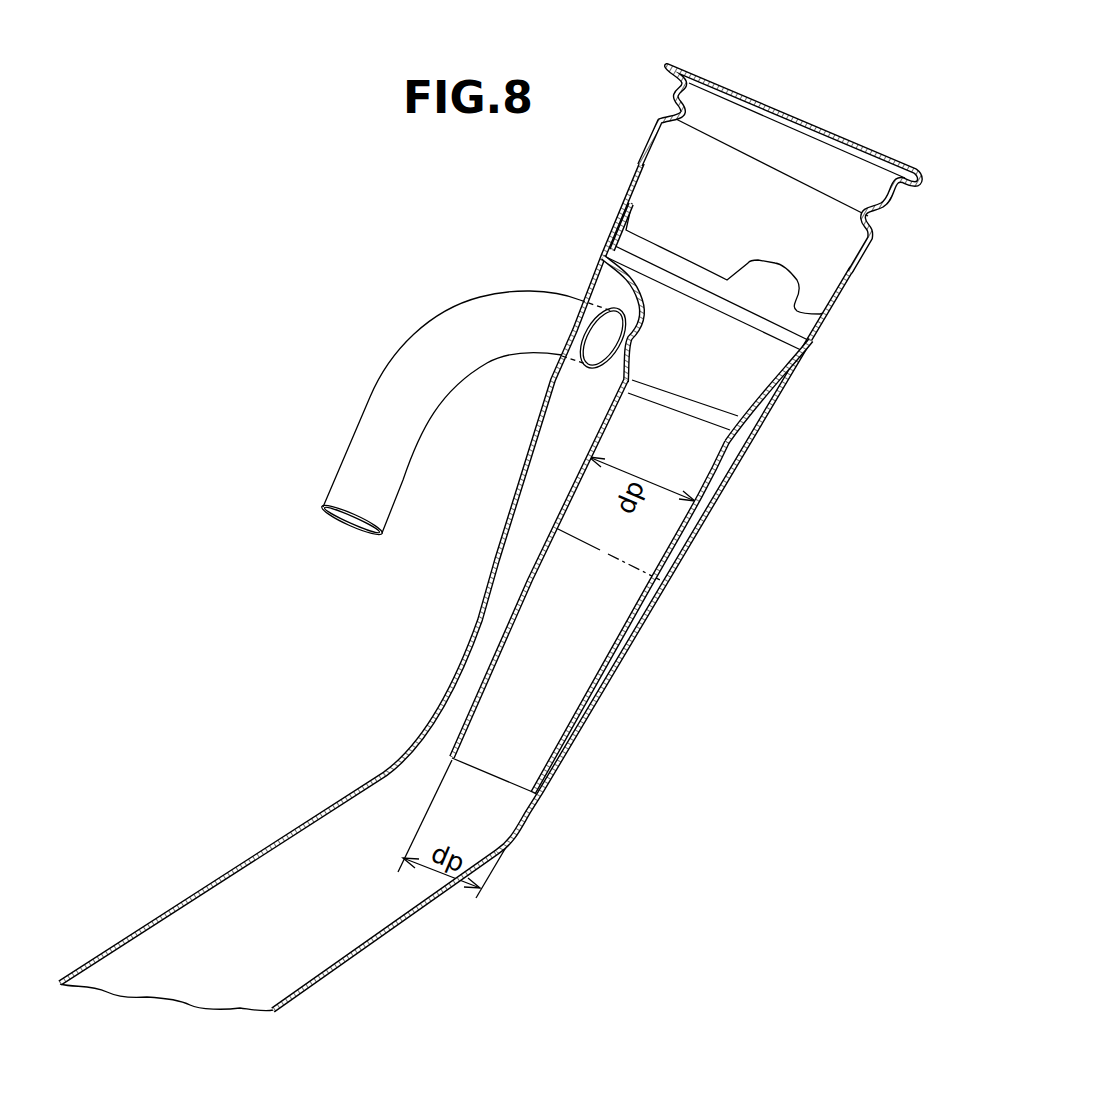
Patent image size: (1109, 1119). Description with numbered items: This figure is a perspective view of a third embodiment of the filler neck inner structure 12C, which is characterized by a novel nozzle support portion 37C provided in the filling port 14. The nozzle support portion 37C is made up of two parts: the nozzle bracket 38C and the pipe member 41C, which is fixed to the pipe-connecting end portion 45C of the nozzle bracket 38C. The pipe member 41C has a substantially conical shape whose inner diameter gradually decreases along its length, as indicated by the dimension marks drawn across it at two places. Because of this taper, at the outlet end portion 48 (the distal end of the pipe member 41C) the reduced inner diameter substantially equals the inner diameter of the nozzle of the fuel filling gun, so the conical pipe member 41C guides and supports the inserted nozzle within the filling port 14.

The filling port 14 is at (746, 104).
The nozzle bracket 38C is at (612, 282).
The inner structure 12C is at (558, 417).
The nozzle support portion 37C is at (561, 481).
The pipe member 41C is at (548, 537).
The pipe-connecting end portion 45C is at (693, 414).
The outlet end portion 48 is at (477, 757).